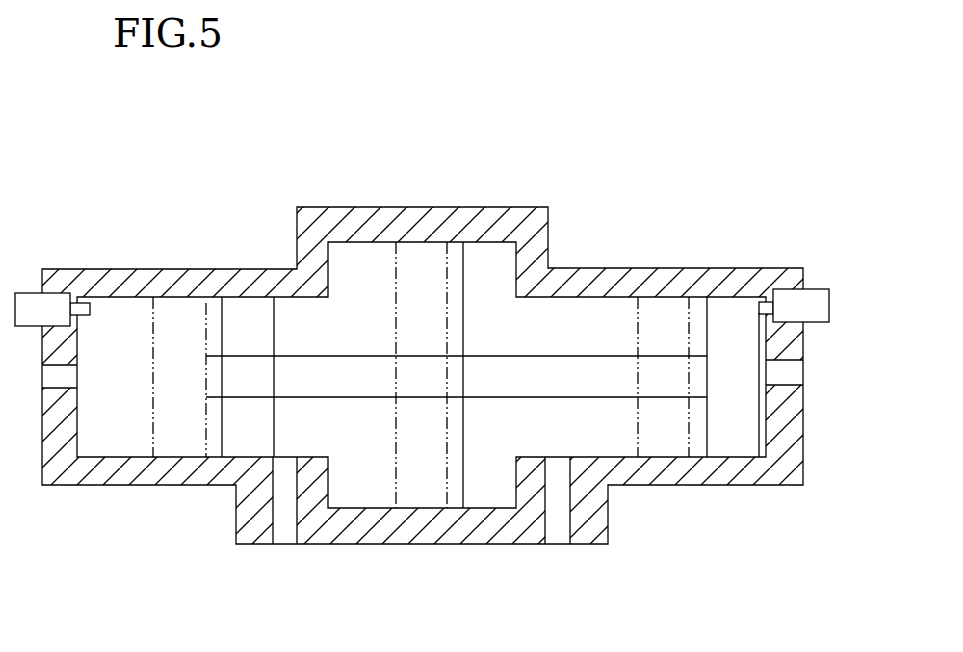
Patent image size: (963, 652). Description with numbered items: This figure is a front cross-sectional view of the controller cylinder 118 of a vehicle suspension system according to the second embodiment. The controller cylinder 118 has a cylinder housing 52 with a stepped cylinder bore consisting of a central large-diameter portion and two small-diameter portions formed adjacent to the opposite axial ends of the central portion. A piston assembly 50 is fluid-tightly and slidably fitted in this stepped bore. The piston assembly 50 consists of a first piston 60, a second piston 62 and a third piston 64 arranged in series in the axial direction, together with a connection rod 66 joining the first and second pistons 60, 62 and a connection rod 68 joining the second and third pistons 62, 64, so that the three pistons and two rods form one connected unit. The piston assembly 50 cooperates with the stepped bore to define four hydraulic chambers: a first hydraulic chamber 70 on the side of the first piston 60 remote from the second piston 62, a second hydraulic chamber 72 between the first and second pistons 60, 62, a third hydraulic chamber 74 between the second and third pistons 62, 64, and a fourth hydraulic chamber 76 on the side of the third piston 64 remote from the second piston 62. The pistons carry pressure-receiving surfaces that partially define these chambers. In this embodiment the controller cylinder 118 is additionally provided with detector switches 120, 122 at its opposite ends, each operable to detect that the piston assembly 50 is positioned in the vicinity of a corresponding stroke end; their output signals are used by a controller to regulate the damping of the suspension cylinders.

The controller cylinder 118 is at (599, 176).
The cylinder housing 52 is at (419, 222).
The piston assembly 50 is at (429, 424).
The first piston 60 is at (243, 445).
The second piston 62 is at (498, 485).
The third piston 64 is at (737, 442).
The connection rod 66 is at (370, 378).
The connection rod 68 is at (663, 382).
The first hydraulic chamber 70 is at (98, 443).
The second hydraulic chamber 72 is at (358, 490).
The third hydraulic chamber 74 is at (583, 428).
The fourth hydraulic chamber 76 is at (760, 413).
The detector switch 120 is at (25, 302).
The detector switch 122 is at (812, 300).